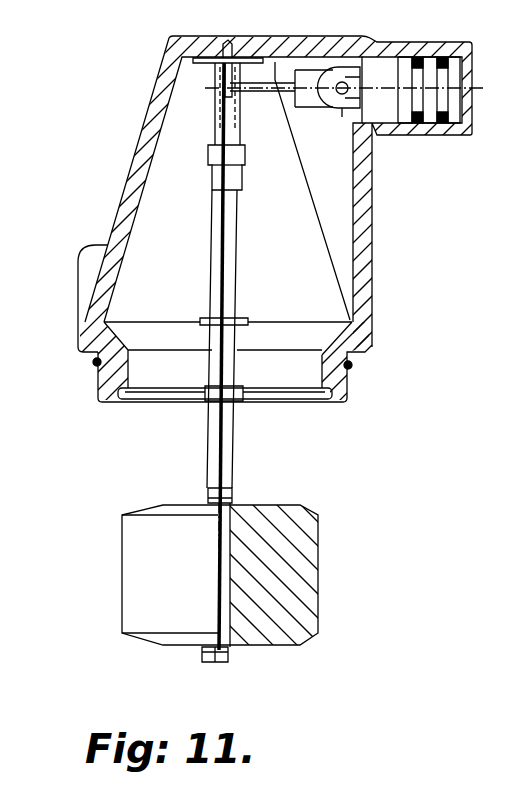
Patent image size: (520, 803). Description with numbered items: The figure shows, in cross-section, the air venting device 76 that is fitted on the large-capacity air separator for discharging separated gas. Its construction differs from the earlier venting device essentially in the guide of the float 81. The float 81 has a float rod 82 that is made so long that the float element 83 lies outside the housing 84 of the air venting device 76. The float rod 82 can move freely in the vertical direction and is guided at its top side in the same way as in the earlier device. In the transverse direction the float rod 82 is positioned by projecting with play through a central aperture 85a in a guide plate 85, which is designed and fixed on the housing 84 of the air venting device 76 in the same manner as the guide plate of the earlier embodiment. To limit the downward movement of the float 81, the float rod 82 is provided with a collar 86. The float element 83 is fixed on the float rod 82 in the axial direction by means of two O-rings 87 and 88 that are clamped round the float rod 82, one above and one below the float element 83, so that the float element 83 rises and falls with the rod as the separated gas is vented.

The air venting device 76 is at (124, 110).
The housing 84 is at (147, 163).
The float rod 82 is at (210, 250).
The collar 86 is at (250, 320).
The guide plate 85 is at (305, 393).
The central aperture 85a is at (236, 398).
The float 81 is at (188, 500).
The O-ring 87 is at (232, 500).
The float element 83 is at (163, 567).
The O-ring 88 is at (235, 648).